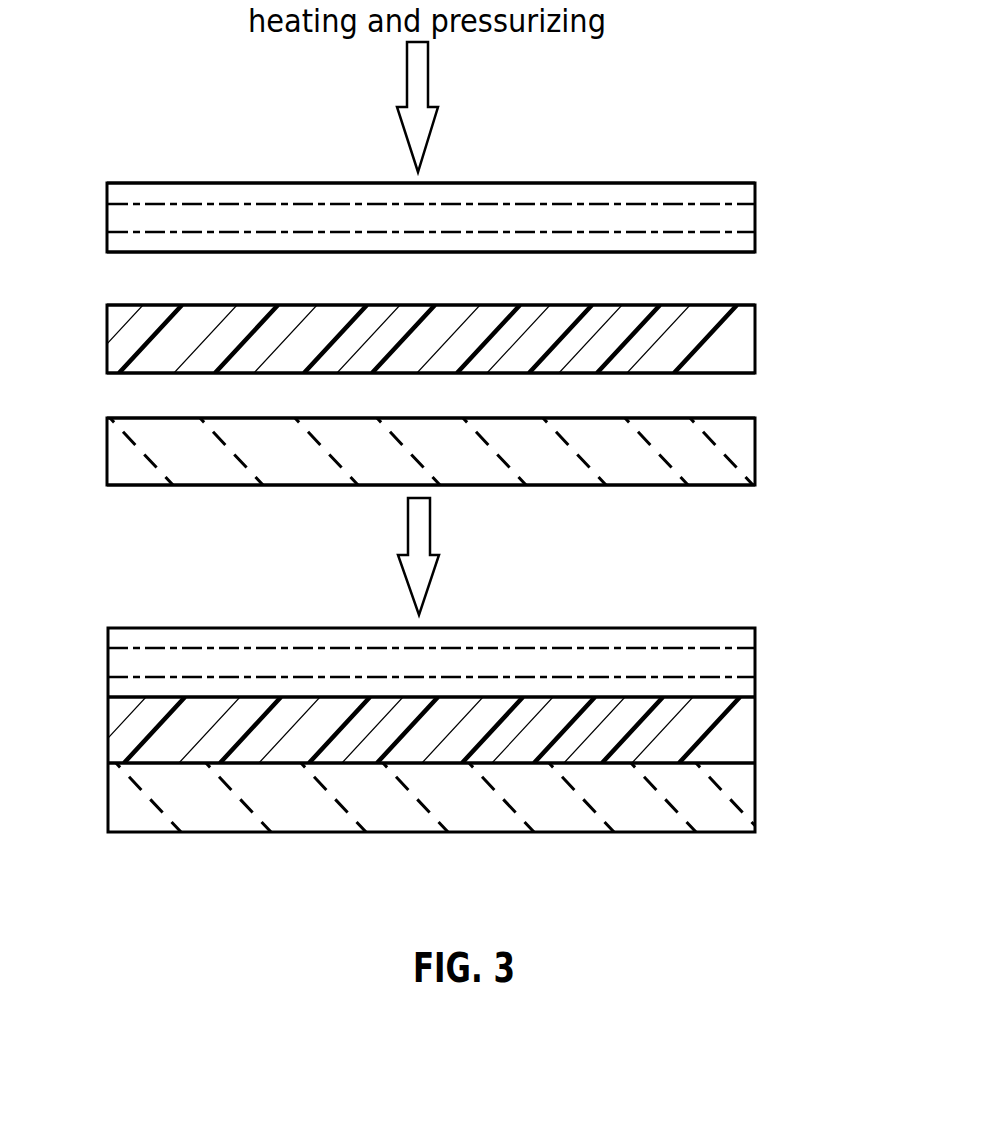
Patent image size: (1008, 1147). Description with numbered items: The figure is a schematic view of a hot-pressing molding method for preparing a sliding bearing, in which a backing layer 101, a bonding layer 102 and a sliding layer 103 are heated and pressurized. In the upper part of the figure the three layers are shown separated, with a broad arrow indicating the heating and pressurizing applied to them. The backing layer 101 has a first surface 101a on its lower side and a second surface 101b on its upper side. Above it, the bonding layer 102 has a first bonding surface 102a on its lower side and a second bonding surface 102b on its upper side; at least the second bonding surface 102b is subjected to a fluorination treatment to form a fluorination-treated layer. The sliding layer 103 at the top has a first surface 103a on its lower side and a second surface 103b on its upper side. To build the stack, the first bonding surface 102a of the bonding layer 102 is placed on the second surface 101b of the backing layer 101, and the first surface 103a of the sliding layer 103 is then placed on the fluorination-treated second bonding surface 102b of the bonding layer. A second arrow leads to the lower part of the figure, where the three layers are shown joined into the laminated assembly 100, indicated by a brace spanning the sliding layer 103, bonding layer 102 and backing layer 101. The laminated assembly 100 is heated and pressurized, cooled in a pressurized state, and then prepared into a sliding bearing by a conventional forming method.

The laminated assembly 100 is at (767, 662).
The backing layer 101 is at (407, 625).
The first surface of the backing layer 101a is at (740, 485).
The second surface of the backing layer 101b is at (730, 418).
The bonding layer 102 is at (401, 534).
The first bonding surface 102a is at (725, 373).
The second bonding surface 102b is at (720, 305).
The sliding layer 103 is at (401, 440).
The first surface of the sliding layer 103a is at (725, 252).
The second surface of the sliding layer 103b is at (720, 183).